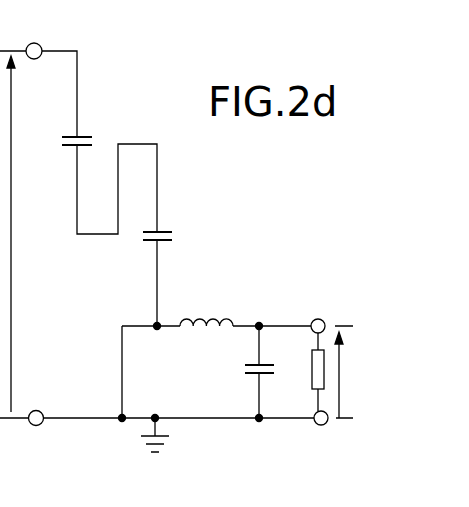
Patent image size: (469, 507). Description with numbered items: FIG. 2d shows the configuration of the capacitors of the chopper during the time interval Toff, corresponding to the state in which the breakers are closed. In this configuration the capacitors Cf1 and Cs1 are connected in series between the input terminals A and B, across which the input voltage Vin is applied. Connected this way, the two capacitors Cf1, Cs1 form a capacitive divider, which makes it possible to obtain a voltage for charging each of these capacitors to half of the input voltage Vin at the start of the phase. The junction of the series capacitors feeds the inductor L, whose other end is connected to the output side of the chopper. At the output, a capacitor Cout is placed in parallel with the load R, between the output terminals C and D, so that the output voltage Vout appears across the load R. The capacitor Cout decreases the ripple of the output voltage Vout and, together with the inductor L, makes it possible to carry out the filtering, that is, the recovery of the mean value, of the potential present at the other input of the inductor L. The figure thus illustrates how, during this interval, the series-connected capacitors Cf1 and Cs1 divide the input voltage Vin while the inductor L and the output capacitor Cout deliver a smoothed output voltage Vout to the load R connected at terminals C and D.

The input terminal A is at (29, 45).
The input terminal B is at (39, 427).
The output terminal C is at (316, 318).
The output terminal D is at (317, 426).
The capacitor Cf1 is at (61, 139).
The capacitor Cs1 is at (176, 238).
The inductor L is at (206, 318).
The capacitor Cout is at (245, 370).
The load R is at (312, 375).
The input voltage Vin is at (24, 234).
The output voltage Vout is at (357, 372).